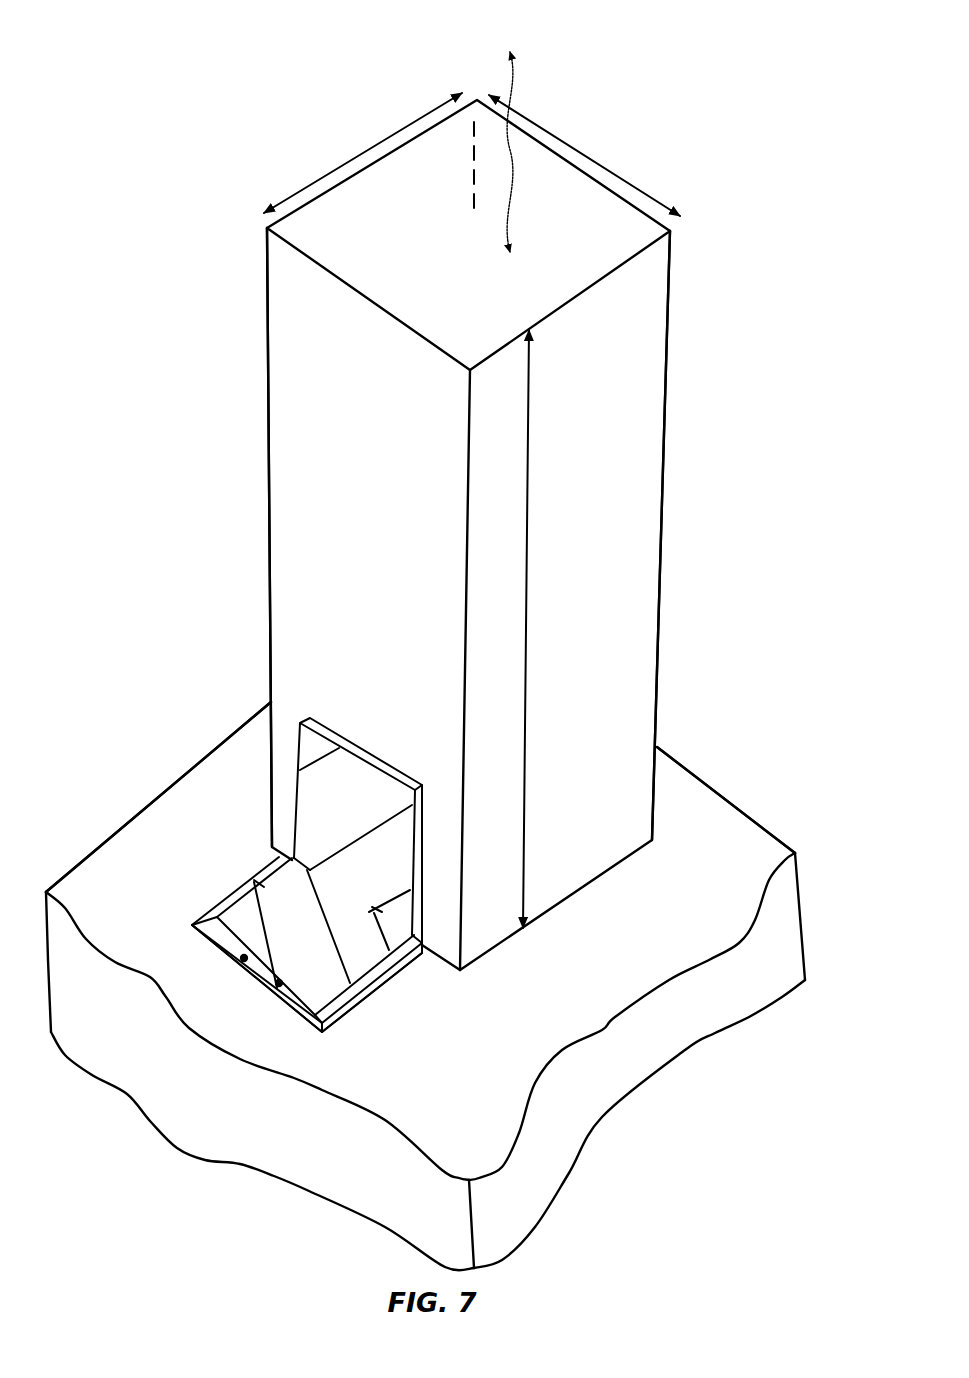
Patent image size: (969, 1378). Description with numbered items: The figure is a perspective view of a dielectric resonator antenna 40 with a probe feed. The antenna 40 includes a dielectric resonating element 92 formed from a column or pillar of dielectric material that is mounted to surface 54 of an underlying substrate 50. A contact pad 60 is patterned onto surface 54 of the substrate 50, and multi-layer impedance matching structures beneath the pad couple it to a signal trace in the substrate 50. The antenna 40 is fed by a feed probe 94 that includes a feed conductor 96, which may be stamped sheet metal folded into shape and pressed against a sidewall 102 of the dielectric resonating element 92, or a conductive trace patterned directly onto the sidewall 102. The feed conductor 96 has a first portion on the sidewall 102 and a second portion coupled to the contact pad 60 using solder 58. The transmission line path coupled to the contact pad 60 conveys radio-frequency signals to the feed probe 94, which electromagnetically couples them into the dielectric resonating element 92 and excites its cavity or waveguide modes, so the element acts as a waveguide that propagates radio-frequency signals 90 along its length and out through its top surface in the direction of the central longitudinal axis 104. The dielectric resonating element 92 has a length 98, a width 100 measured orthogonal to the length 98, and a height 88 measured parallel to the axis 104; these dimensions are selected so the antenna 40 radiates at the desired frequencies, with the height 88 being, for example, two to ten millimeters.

The antenna 40 is at (708, 168).
The substrate 50 is at (792, 935).
The surface 54 is at (702, 850).
The solder 58 is at (242, 962).
The contact pad 60 is at (360, 998).
The height 88 is at (531, 636).
The radio-frequency signals 90 is at (513, 73).
The dielectric resonating element 92 is at (655, 406).
The feed probe 94 is at (120, 793).
The feed conductor 96 is at (350, 767).
The length 98 is at (355, 153).
The width 100 is at (603, 167).
The sidewall 102 is at (283, 540).
The central/longitudinal axis 104 is at (470, 158).